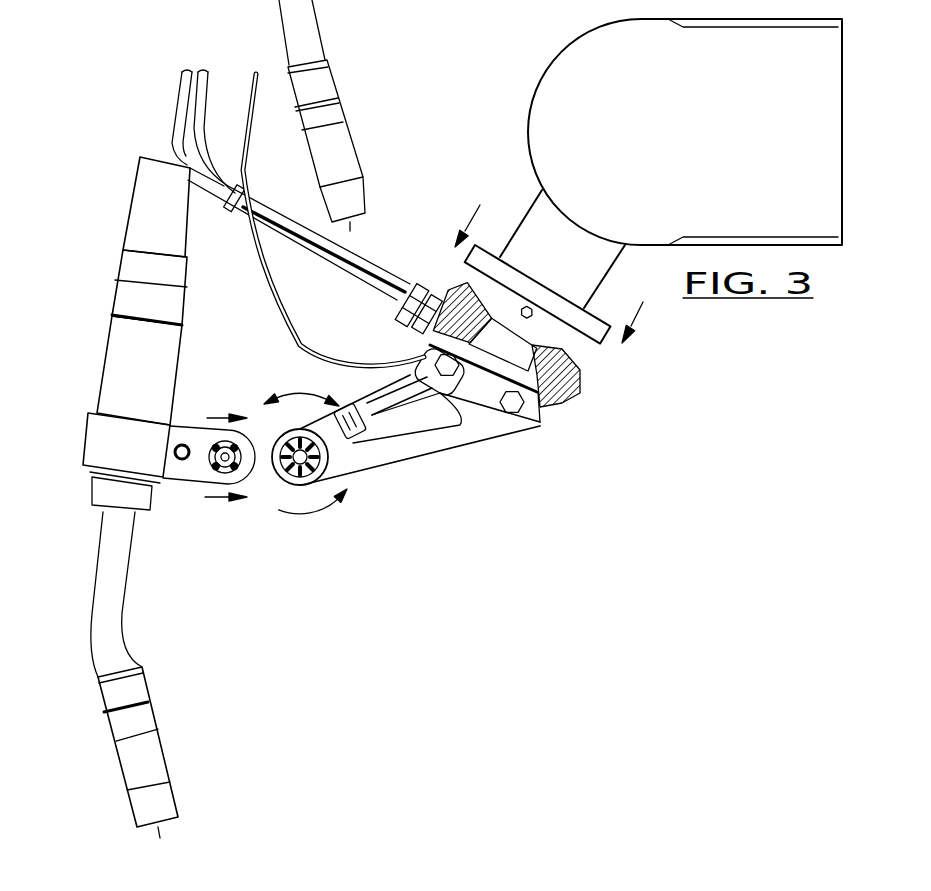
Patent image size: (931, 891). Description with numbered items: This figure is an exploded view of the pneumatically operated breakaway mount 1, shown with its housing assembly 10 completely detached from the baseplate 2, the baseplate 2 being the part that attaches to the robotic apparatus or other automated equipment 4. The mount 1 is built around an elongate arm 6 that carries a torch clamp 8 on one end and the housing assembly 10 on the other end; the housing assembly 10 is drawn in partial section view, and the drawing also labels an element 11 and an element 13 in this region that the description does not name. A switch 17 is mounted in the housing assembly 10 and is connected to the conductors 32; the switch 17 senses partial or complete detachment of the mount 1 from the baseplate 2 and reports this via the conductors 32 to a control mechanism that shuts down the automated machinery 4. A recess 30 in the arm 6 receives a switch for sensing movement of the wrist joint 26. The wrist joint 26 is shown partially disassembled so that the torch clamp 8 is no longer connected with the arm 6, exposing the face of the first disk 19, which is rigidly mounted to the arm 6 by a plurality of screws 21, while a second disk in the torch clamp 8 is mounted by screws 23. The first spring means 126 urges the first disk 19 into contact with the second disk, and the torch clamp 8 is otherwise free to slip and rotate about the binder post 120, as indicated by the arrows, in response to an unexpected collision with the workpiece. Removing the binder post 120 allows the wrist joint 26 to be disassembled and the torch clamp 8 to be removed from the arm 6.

The breakaway mount 1 is at (520, 574).
The baseplate 2 is at (612, 314).
The automated equipment 4 is at (729, 136).
The elongate arm 6 is at (423, 450).
The torch clamp 8 is at (123, 445).
The housing assembly 10 is at (572, 393).
The support block 11 is at (545, 421).
The bolt 13 is at (512, 410).
The switch 17 is at (583, 369).
The first disk 19 is at (305, 486).
The screws 21 is at (350, 445).
The screws 23 is at (213, 484).
The wrist joint 26 is at (268, 688).
The recess 30 is at (370, 452).
The conductors 32 is at (273, 303).
The binder post 120 is at (248, 488).
The first spring means 126 is at (230, 486).